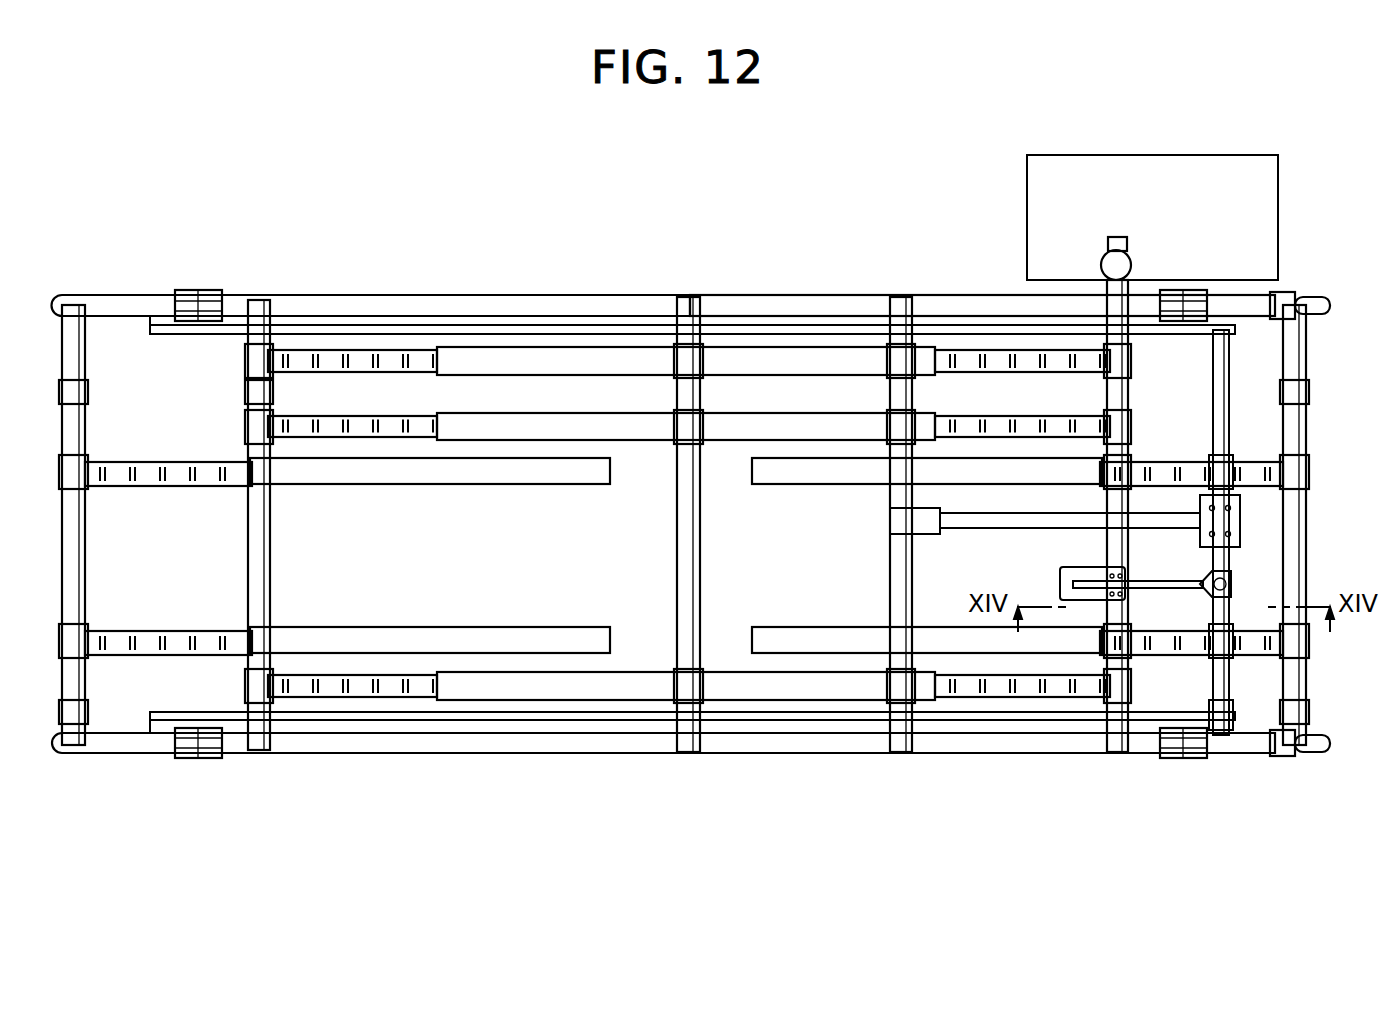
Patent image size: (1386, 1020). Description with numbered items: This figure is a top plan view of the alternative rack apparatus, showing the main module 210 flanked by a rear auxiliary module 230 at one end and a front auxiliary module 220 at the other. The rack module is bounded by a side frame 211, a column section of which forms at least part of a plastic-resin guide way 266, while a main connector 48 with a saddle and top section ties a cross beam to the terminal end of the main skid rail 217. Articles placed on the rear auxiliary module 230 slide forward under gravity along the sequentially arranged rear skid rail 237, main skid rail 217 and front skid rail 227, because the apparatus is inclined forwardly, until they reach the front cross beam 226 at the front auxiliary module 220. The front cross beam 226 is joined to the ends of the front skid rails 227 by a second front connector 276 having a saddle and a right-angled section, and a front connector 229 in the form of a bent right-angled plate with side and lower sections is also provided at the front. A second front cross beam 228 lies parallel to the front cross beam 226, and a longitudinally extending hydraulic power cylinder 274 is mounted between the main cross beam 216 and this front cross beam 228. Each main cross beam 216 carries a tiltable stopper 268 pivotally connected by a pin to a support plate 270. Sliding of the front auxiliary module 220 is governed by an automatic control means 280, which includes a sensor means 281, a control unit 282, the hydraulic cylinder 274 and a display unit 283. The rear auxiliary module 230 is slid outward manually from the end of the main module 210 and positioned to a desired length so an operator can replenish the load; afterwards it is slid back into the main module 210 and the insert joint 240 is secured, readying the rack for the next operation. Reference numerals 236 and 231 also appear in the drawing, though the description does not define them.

The automatic control means 280 is at (1150, 153).
The control unit 282 is at (1027, 182).
The display unit 283 is at (1100, 262).
The rear auxiliary module 230 is at (125, 296).
The side frame 211 is at (510, 297).
The main module 210 is at (790, 297).
The sensor means 281 is at (1300, 325).
The guide way 266 is at (165, 335).
The main connector 48 is at (246, 431).
The main cross beam 216 is at (262, 568).
The main skid rail 217 is at (657, 440).
The rear skid rail 237 is at (540, 485).
The left end post 236 is at (75, 568).
The front skid rail 227 is at (820, 627).
The hydraulic power cylinder 274 is at (962, 520).
The front connector 229 is at (1200, 532).
The support plate 270 is at (1060, 572).
The tiltable stopper 268 is at (1232, 584).
The front cross beam 228 is at (1215, 405).
The front cross beam 226 is at (1296, 433).
The second front connector 276 is at (1306, 470).
The lower frame tube 231 is at (135, 755).
The insert joint 240 is at (1172, 758).
The front auxiliary module 220 is at (1252, 755).